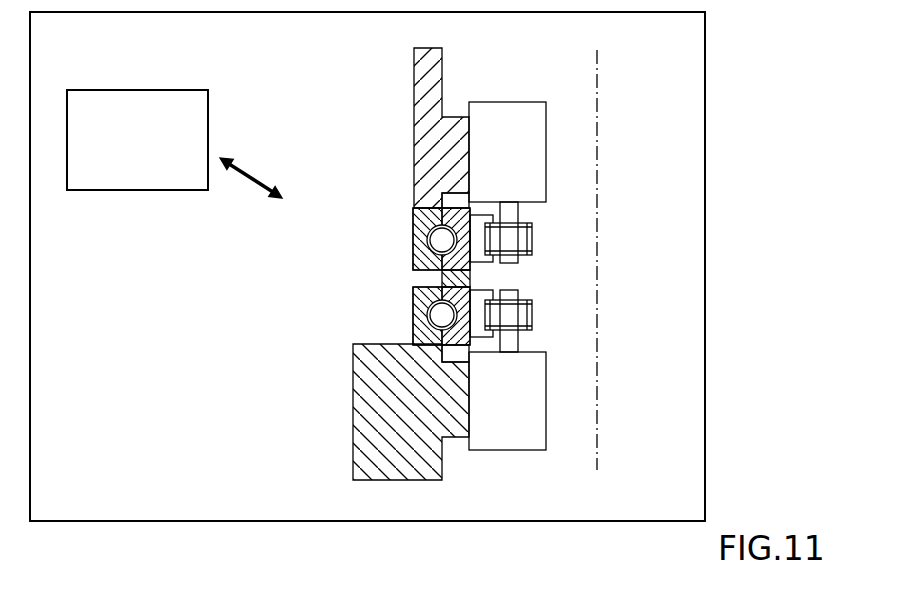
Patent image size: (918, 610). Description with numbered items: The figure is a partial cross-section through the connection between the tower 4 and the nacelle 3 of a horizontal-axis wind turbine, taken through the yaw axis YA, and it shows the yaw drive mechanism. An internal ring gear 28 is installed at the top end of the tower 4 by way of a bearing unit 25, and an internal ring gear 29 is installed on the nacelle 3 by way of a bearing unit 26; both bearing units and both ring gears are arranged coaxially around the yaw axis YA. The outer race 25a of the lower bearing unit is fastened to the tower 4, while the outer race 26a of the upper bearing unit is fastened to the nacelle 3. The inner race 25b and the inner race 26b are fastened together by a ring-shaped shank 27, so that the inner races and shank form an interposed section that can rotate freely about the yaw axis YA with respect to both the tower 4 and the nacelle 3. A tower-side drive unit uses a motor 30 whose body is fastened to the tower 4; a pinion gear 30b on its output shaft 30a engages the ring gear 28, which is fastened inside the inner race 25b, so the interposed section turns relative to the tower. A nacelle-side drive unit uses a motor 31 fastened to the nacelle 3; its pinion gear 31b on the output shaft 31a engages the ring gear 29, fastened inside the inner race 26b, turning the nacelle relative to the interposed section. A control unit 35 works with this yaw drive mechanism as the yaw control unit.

The nacelle 3 is at (420, 121).
The tower 4 is at (377, 458).
The bearing unit 25 is at (378, 349).
The outer race 25a is at (422, 297).
The inner race 25b is at (441, 338).
The bearing unit 26 is at (379, 200).
The outer race 26a is at (422, 252).
The inner race 26b is at (440, 214).
The shank 27 is at (445, 279).
The internal ring gear 28 is at (526, 308).
The internal ring gear 29 is at (526, 244).
The motor 30 is at (508, 452).
The output shaft 30a is at (512, 338).
The pinion gear 30b is at (525, 325).
The motor 31 is at (512, 102).
The output shaft 31a is at (515, 217).
The pinion gear 31b is at (525, 240).
The control unit 35 is at (170, 88).
The yaw axis YA is at (597, 128).